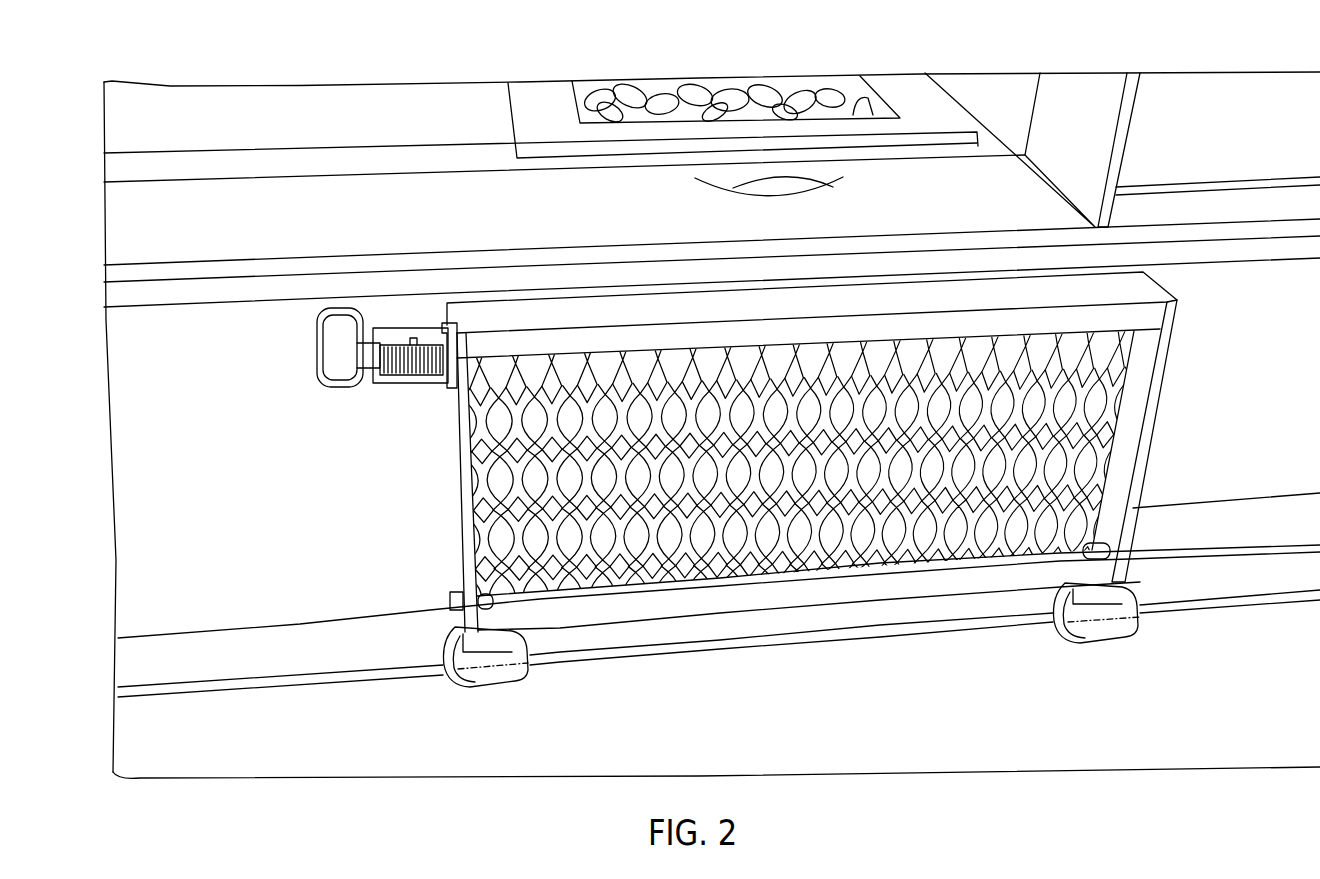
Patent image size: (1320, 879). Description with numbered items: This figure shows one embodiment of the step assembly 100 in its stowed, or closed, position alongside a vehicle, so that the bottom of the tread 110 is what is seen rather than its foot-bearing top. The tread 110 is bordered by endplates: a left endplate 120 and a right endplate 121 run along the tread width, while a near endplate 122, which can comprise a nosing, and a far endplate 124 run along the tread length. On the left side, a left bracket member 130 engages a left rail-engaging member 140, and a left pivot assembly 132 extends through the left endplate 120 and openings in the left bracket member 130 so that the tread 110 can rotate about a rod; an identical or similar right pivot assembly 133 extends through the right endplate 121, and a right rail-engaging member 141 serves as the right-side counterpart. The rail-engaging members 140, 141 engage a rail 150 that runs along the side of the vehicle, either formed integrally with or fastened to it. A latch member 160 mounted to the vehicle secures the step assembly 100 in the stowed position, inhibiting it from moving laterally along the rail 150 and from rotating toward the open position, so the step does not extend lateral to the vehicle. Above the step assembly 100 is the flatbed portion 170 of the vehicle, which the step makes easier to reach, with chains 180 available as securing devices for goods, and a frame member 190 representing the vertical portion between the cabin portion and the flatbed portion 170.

The step assembly 100 is at (688, 691).
The tread 110 is at (472, 388).
The left endplate 120 is at (465, 460).
The right endplate 121 is at (1153, 388).
The near endplate 122 is at (1153, 295).
The far endplate 124 is at (777, 625).
The left bracket member 130 is at (457, 577).
The left pivot assembly 132 is at (450, 603).
The right pivot assembly 133 is at (1082, 552).
The left rail-engaging member 140 is at (447, 635).
The right rail-engaging member 141 is at (1130, 600).
The rail 150 is at (226, 687).
The latch member 160 is at (317, 345).
The flatbed portion 170 is at (312, 98).
The chains 180 is at (745, 77).
The frame member 190 is at (1131, 74).